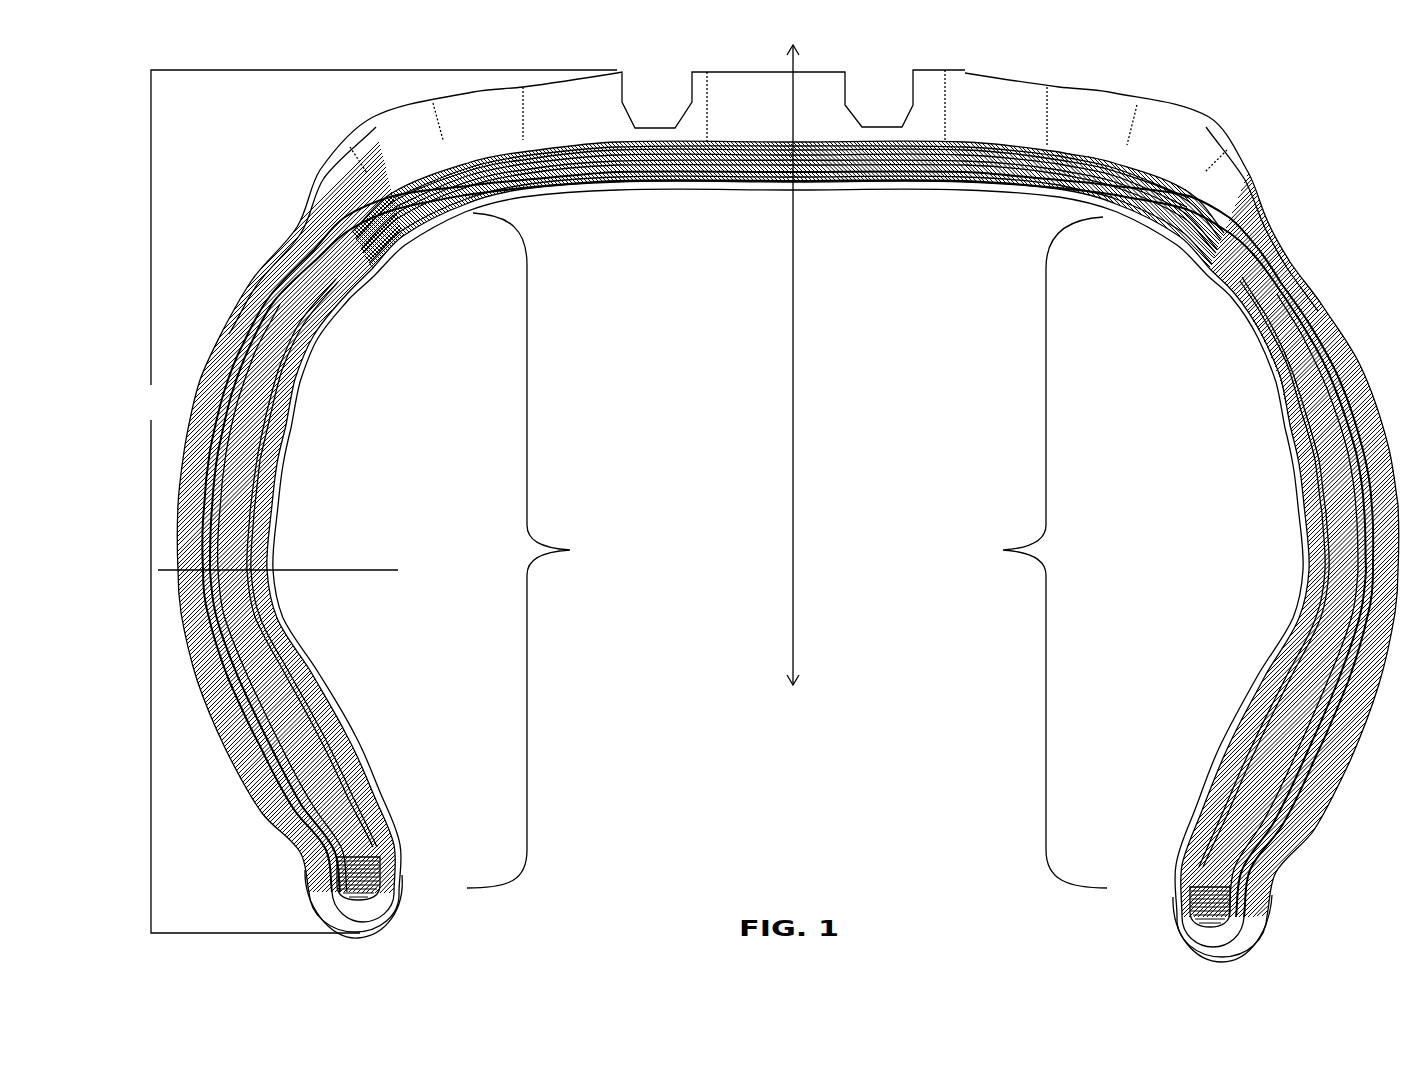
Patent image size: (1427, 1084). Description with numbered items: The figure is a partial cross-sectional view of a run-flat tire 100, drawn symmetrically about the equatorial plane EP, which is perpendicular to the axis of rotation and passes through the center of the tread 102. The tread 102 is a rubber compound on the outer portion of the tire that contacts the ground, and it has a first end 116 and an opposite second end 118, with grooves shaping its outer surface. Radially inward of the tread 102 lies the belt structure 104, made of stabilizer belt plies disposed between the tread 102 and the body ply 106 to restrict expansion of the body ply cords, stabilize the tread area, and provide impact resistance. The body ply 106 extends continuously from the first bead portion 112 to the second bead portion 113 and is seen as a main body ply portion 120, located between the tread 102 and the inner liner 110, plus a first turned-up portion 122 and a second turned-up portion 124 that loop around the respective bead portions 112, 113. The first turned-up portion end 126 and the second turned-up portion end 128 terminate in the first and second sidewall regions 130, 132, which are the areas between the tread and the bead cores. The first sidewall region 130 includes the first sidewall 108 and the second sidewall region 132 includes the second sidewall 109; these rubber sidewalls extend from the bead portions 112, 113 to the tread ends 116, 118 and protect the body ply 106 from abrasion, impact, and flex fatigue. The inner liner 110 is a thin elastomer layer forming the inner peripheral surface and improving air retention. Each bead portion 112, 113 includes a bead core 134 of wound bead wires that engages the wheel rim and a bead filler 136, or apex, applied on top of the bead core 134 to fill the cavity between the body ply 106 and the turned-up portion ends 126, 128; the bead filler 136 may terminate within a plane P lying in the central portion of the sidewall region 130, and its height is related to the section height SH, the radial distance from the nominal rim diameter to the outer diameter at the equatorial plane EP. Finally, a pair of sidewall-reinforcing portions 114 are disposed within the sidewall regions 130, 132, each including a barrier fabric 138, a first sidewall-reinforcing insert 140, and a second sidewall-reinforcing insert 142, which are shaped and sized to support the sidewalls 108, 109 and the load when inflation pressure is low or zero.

The run-flat tire 100 is at (765, 870).
The tread 102 is at (1010, 82).
The belt structure 104 is at (768, 150).
The body ply 106 is at (1283, 250).
The first sidewall 108 is at (202, 365).
The second sidewall 109 is at (1355, 338).
The inner liner 110 is at (1280, 613).
The first bead portion 112 is at (352, 815).
The second bead portion 113 is at (1223, 837).
The sidewall-reinforcing portion 114 is at (267, 483).
The first end 116 is at (312, 165).
The second end 118 is at (1247, 155).
The main body ply portion 120 is at (723, 180).
The first turned-up portion 122 is at (300, 718).
The second turned-up portion 124 is at (1265, 700).
The first turned-up portion end 126 is at (212, 428).
The second turned-up portion end 128 is at (1363, 437).
The first sidewall region 130 is at (546, 550).
The second sidewall region 132 is at (1026, 552).
The bead core 134 is at (375, 877).
The bead filler 136 is at (347, 843).
The barrier fabric 138 is at (282, 640).
The first sidewall-reinforcing insert 140 is at (270, 400).
The second sidewall-reinforcing insert 142 is at (273, 333).
The equatorial plane EP is at (792, 383).
The section height SH is at (376, 501).
The plane P is at (350, 567).